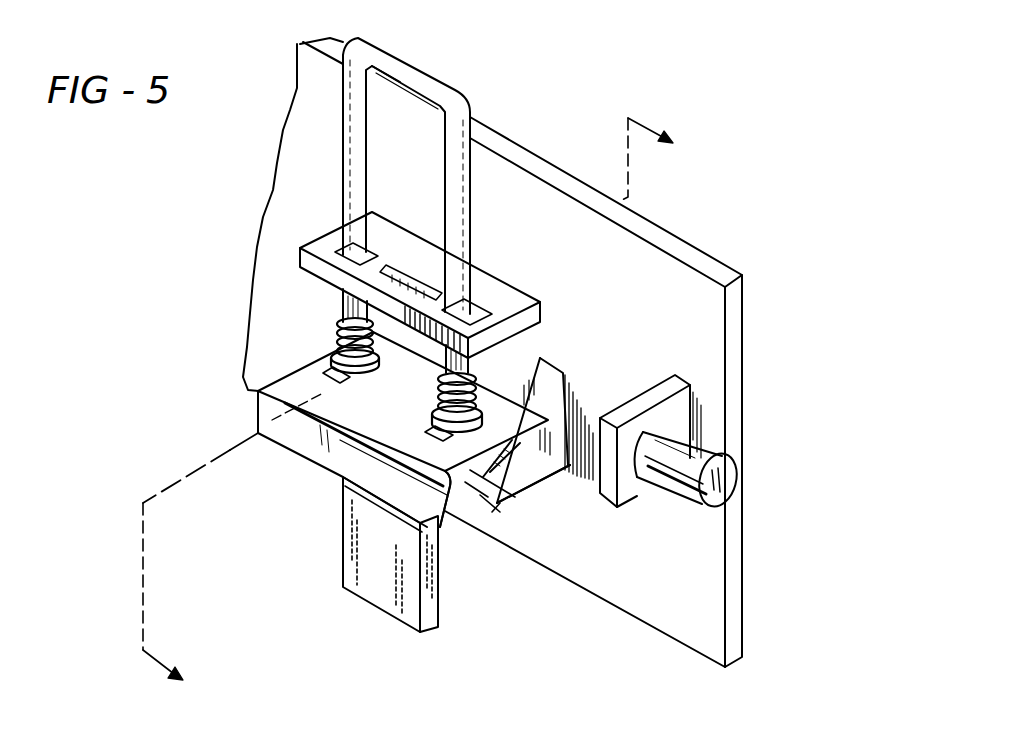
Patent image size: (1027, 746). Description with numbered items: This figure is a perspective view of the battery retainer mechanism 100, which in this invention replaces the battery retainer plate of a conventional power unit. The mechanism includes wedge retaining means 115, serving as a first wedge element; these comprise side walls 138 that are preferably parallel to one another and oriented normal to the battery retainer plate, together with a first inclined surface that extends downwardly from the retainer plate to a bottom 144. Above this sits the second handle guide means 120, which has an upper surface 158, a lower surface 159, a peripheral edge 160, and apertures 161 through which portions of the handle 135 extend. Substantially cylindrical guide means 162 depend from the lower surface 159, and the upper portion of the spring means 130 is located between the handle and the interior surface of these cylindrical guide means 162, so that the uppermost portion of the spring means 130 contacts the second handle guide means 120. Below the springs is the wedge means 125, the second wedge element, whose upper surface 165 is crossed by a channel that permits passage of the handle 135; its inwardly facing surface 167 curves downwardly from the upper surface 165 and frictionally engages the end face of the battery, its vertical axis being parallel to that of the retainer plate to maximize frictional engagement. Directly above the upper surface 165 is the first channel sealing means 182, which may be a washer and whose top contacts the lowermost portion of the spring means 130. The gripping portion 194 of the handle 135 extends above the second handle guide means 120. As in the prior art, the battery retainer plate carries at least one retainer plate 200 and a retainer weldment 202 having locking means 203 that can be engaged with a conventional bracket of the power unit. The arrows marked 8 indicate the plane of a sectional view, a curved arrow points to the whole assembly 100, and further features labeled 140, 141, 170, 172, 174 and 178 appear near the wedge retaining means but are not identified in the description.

The section line 8- 8 is at (419, 411).
The battery retainer mechanism 100 is at (373, 620).
The wedge retaining means 115 is at (563, 478).
The second handle guide means 120 is at (317, 224).
The wedge means 125 is at (330, 477).
The spring means 130 is at (338, 373).
The handle 135 is at (413, 58).
The side walls 138 is at (552, 405).
The wedge block 140 is at (537, 365).
The latch member 141 is at (487, 515).
The bottom 144 is at (533, 483).
The upper surface 158 is at (512, 297).
The lower surface 159 is at (338, 276).
The peripheral edge 160 is at (527, 333).
The apertures 161 is at (380, 243).
The cylindrical guide means 162 is at (340, 322).
The upper surface 165 is at (258, 391).
The inwardly facing surface 167 is at (290, 455).
The latch arm 170 is at (478, 470).
The latch pivot 172 is at (490, 477).
The flange corner 174 is at (460, 472).
The latch pin 178 is at (460, 472).
The first channel sealing means 182 is at (302, 433).
The gripping portion 194 is at (367, 60).
The retainer plate 200 is at (400, 627).
The retainer weldment 202 is at (683, 410).
The locking means 203 is at (735, 477).